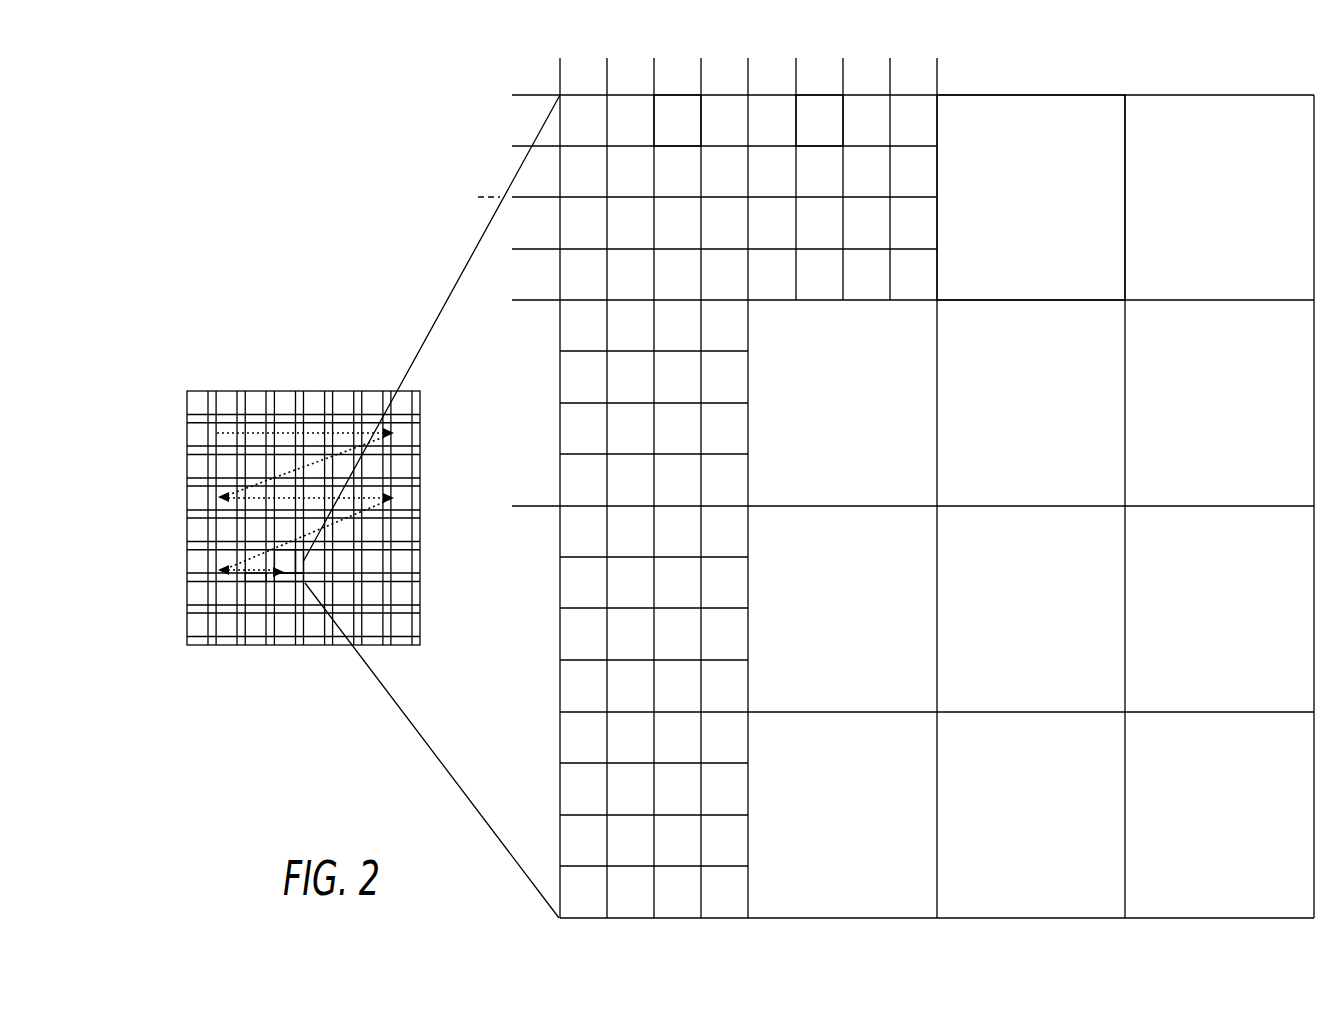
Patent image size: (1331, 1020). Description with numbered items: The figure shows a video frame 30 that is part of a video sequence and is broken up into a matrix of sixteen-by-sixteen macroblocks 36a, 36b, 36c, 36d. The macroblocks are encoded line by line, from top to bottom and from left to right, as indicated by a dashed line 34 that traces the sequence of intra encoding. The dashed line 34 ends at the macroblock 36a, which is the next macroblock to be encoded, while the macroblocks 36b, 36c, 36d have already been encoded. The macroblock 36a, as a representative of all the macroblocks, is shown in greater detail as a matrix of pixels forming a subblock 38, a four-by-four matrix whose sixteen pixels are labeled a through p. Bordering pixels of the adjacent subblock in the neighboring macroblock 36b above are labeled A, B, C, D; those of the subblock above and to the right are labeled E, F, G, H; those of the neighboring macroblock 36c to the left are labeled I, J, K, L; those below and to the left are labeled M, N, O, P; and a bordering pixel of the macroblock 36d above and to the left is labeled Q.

The video frame 30 is at (422, 427).
The dashed line 34 is at (232, 432).
The macroblock 36a is at (1112, 45).
The neighboring macroblock 36b is at (297, 555).
The neighboring macroblock 36c is at (265, 577).
The macroblock 36d is at (280, 558).
The subblock 38 is at (694, 112).